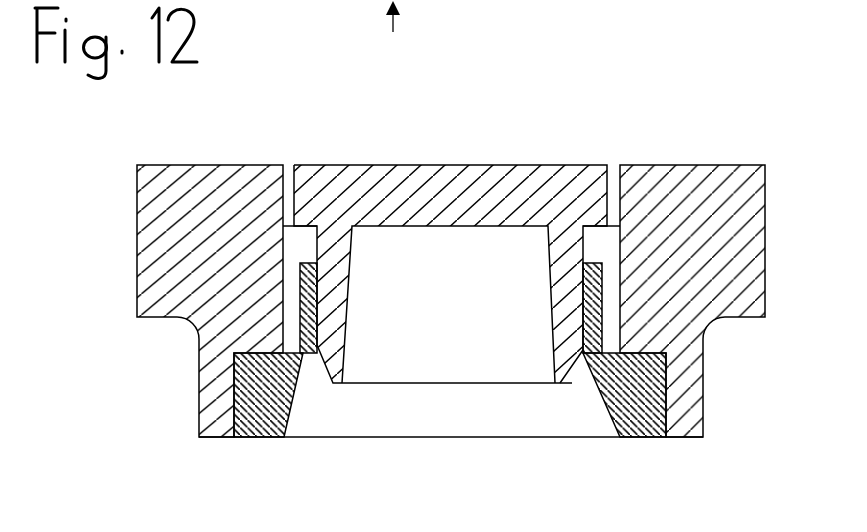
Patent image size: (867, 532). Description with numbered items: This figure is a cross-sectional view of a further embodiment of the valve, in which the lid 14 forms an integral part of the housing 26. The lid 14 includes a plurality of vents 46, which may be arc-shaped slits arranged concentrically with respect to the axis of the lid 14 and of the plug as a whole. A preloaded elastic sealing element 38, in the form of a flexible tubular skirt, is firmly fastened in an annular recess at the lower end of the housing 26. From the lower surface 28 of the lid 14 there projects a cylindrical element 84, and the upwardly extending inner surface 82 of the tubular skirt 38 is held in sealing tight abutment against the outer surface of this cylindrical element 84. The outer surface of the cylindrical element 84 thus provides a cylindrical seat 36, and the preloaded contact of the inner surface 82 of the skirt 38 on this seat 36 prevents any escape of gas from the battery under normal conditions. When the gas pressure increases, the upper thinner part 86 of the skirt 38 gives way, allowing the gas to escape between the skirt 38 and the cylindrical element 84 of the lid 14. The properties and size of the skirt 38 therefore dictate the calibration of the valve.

The housing 26 is at (178, 302).
The lid 14 is at (441, 187).
The lower surface 28 is at (512, 233).
The cylindrical seat 36 is at (314, 238).
The vents 46 is at (611, 183).
The inner surface 82 is at (583, 306).
The cylindrical element 84 is at (333, 328).
The upper thinner part 86 is at (310, 302).
The elastic sealing element 38 is at (630, 410).